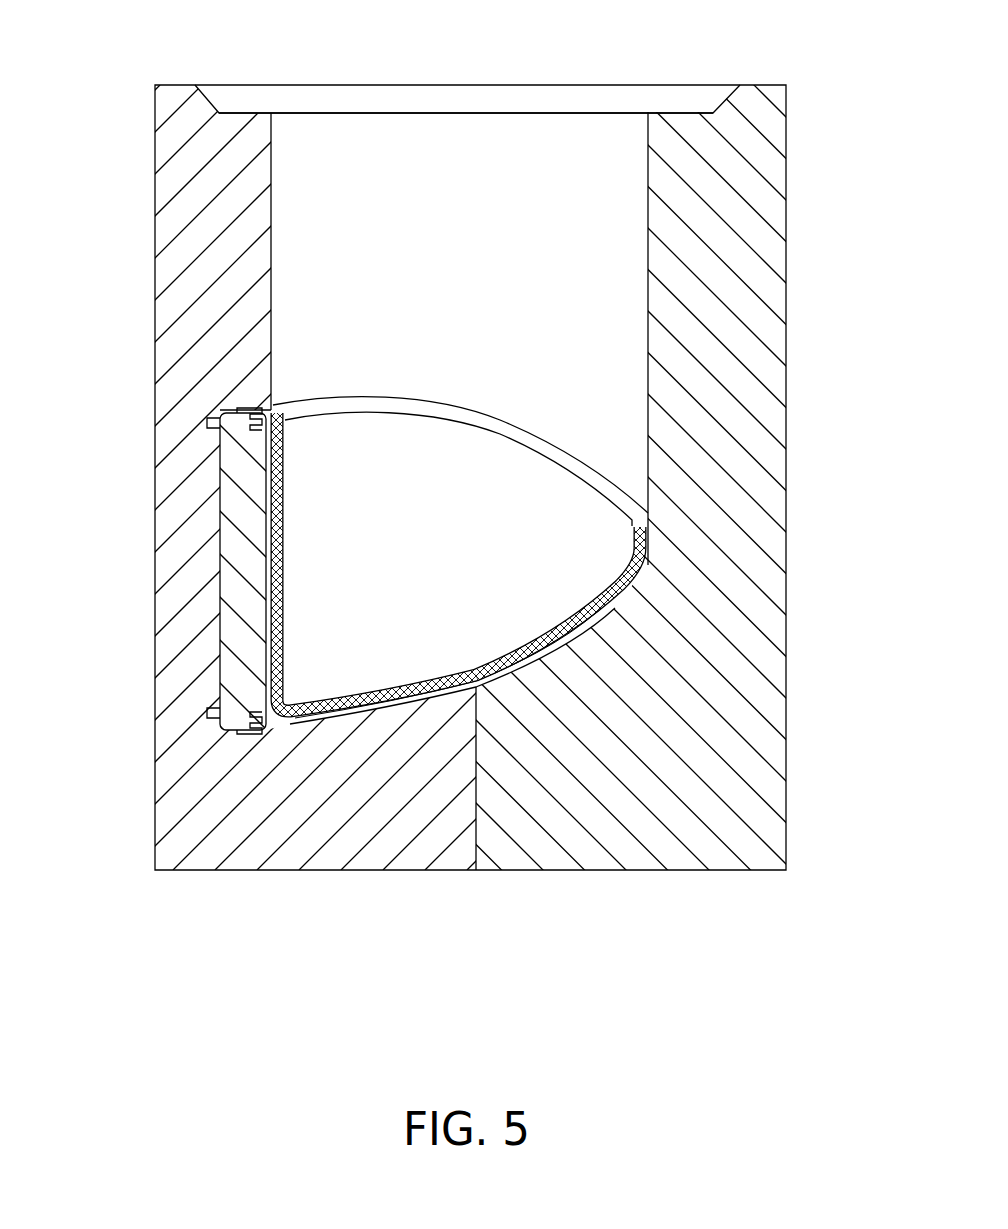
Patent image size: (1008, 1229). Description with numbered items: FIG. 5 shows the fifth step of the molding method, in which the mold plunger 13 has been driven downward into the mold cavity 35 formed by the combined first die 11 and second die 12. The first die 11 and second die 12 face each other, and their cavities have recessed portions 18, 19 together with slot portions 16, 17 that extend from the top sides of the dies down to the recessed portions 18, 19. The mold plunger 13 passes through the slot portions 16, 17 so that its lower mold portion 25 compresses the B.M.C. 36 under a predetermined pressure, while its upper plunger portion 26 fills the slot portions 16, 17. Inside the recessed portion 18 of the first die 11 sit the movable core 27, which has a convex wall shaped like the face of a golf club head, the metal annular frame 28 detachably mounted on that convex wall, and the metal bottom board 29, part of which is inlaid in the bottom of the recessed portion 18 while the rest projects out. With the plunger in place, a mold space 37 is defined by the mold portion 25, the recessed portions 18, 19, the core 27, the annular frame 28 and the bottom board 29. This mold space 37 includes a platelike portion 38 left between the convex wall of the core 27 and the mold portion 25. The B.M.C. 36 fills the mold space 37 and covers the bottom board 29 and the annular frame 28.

The first die 11 is at (155, 189).
The second die 12 is at (786, 410).
The mold plunger 13 is at (307, 133).
The slot portion 16 is at (270, 300).
The slot portion 17 is at (648, 213).
The recessed portion 18 is at (332, 705).
The recessed portion 19 is at (492, 668).
The mold portion 25 is at (540, 507).
The plunger portion 26 is at (617, 278).
The movable core 27 is at (235, 590).
The annular frame 28 is at (247, 410).
The bottom board 29 is at (500, 667).
The mold cavity 35 is at (648, 340).
The B.M.C. 36 is at (645, 570).
The mold space 37 is at (619, 600).
The platelike portion 38 is at (283, 565).